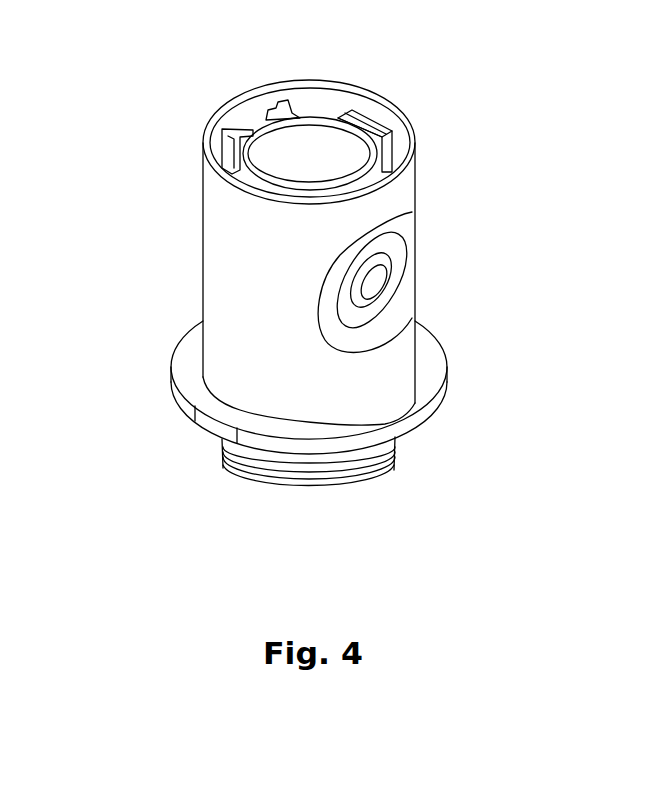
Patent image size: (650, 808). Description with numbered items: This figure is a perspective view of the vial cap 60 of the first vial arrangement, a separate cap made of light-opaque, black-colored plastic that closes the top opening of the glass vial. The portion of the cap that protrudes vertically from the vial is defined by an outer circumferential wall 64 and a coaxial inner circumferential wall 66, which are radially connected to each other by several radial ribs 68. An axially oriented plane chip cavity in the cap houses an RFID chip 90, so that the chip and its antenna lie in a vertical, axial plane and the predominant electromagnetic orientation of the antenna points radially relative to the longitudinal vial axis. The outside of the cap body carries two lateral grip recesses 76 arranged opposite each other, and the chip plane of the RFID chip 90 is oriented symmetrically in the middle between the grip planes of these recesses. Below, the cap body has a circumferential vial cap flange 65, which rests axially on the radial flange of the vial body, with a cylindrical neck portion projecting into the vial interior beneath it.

The vial cap 60 is at (157, 243).
The outer circumferential wall 64 is at (239, 100).
The vial cap flange 65 is at (427, 373).
The inner circumferential wall 66 is at (253, 130).
The radial ribs 68 is at (271, 104).
The lateral grip recesses 76 is at (412, 288).
The RFID chip 90 is at (368, 122).